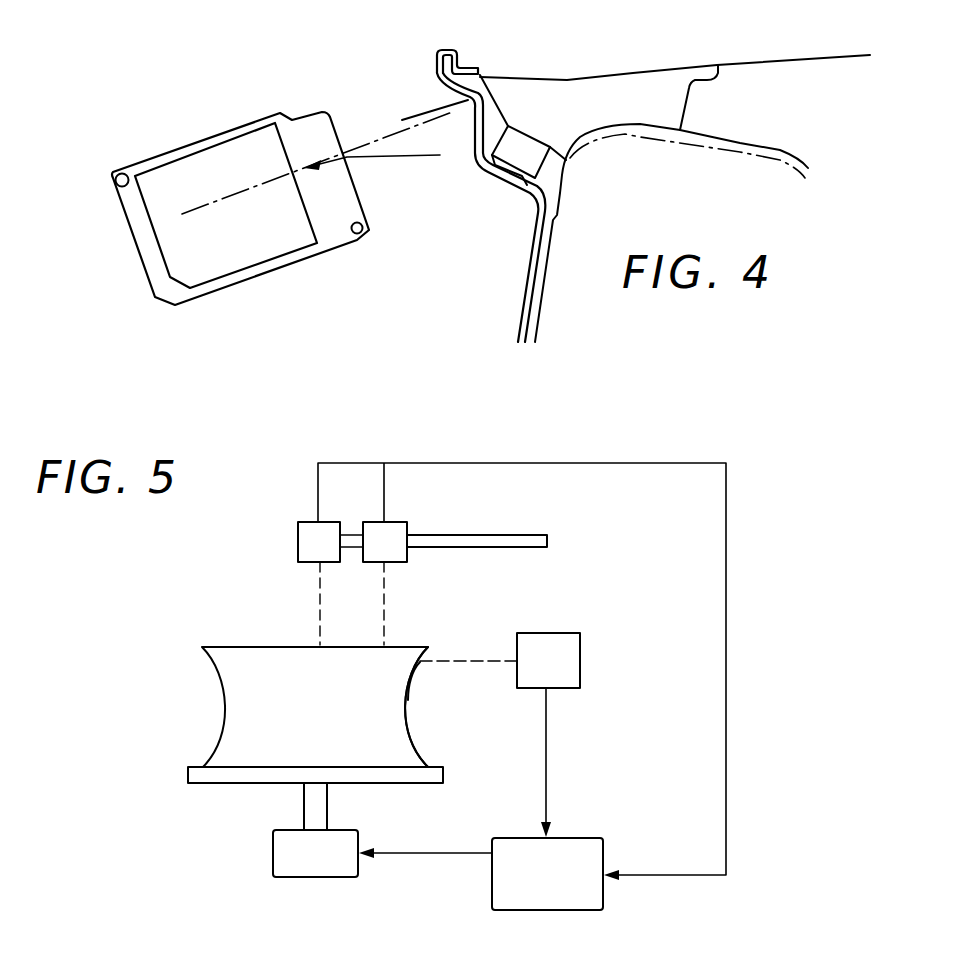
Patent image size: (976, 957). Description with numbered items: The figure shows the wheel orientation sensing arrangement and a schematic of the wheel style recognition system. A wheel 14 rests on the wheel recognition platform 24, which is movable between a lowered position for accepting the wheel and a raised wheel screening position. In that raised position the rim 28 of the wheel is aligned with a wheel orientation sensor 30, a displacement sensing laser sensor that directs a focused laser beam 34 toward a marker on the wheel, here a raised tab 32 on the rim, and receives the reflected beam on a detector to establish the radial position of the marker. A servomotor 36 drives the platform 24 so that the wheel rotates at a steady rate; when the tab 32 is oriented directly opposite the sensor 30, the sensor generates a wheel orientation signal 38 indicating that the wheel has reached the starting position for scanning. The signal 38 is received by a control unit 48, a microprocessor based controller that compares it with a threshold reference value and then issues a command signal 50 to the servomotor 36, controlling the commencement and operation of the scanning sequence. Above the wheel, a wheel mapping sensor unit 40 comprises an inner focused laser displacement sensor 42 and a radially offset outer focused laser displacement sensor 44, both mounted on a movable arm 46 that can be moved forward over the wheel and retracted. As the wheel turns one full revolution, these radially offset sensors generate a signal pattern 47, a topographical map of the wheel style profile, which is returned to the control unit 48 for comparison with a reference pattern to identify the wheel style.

In FIG. 5, the wheel 14 is at (227, 646).
In FIG. 5, the wheel recognition platform 24 is at (188, 777).
In FIG. 4, the rim 28 is at (434, 91).
In FIG. 5, the rim 28 is at (433, 648).
In FIG. 4, the wheel orientation sensor 30 is at (217, 142).
In FIG. 5, the wheel orientation sensor 30 is at (582, 662).
In FIG. 4, the tab 32 is at (430, 118).
In FIG. 5, the tab 32 is at (419, 668).
In FIG. 4, the laser beam 34 is at (381, 143).
In FIG. 5, the laser beam 34 is at (482, 661).
In FIG. 5, the servomotor 36 is at (273, 853).
In FIG. 5, the wheel orientation signal 38 is at (547, 765).
In FIG. 5, the wheel mapping sensor unit 40 is at (283, 515).
In FIG. 5, the inner focused laser displacement sensor 42 is at (298, 548).
In FIG. 5, the outer focused laser displacement sensor 44 is at (407, 527).
In FIG. 5, the movable arm 46 is at (508, 534).
In FIG. 5, the signal pattern 47 is at (728, 742).
In FIG. 5, the control unit 48 is at (480, 890).
In FIG. 5, the command signal 50 is at (433, 852).